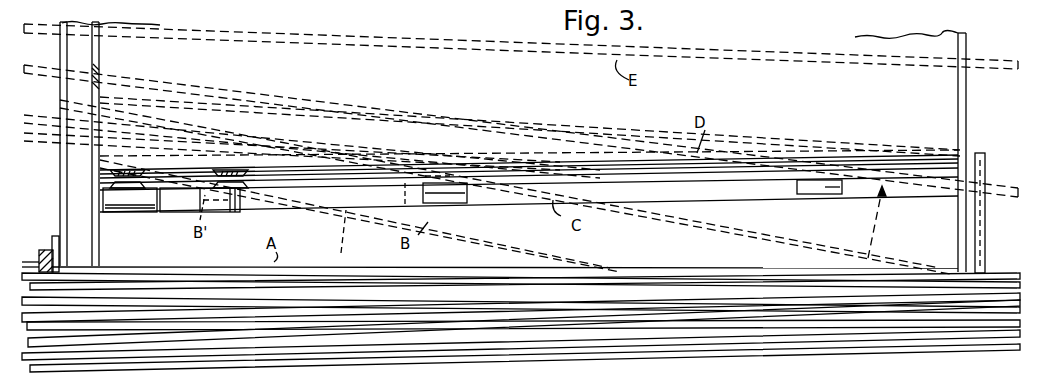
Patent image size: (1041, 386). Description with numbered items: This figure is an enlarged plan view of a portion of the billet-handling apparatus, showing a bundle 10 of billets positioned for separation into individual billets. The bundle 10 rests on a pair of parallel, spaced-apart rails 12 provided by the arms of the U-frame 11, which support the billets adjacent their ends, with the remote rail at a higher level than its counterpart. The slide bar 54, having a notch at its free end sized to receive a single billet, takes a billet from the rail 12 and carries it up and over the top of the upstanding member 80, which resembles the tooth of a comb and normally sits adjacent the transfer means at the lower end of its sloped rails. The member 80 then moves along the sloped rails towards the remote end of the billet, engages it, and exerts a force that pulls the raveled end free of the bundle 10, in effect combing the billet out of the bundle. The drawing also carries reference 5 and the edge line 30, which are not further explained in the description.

The roof structure 5 is at (503, 6).
The bundle 10 is at (737, 255).
The U-frame 11 is at (756, 0).
The rail 12 is at (100, 76).
The roof edge 30 is at (173, 0).
The slide bar 54 is at (38, 250).
The upstanding member 80 is at (181, 204).